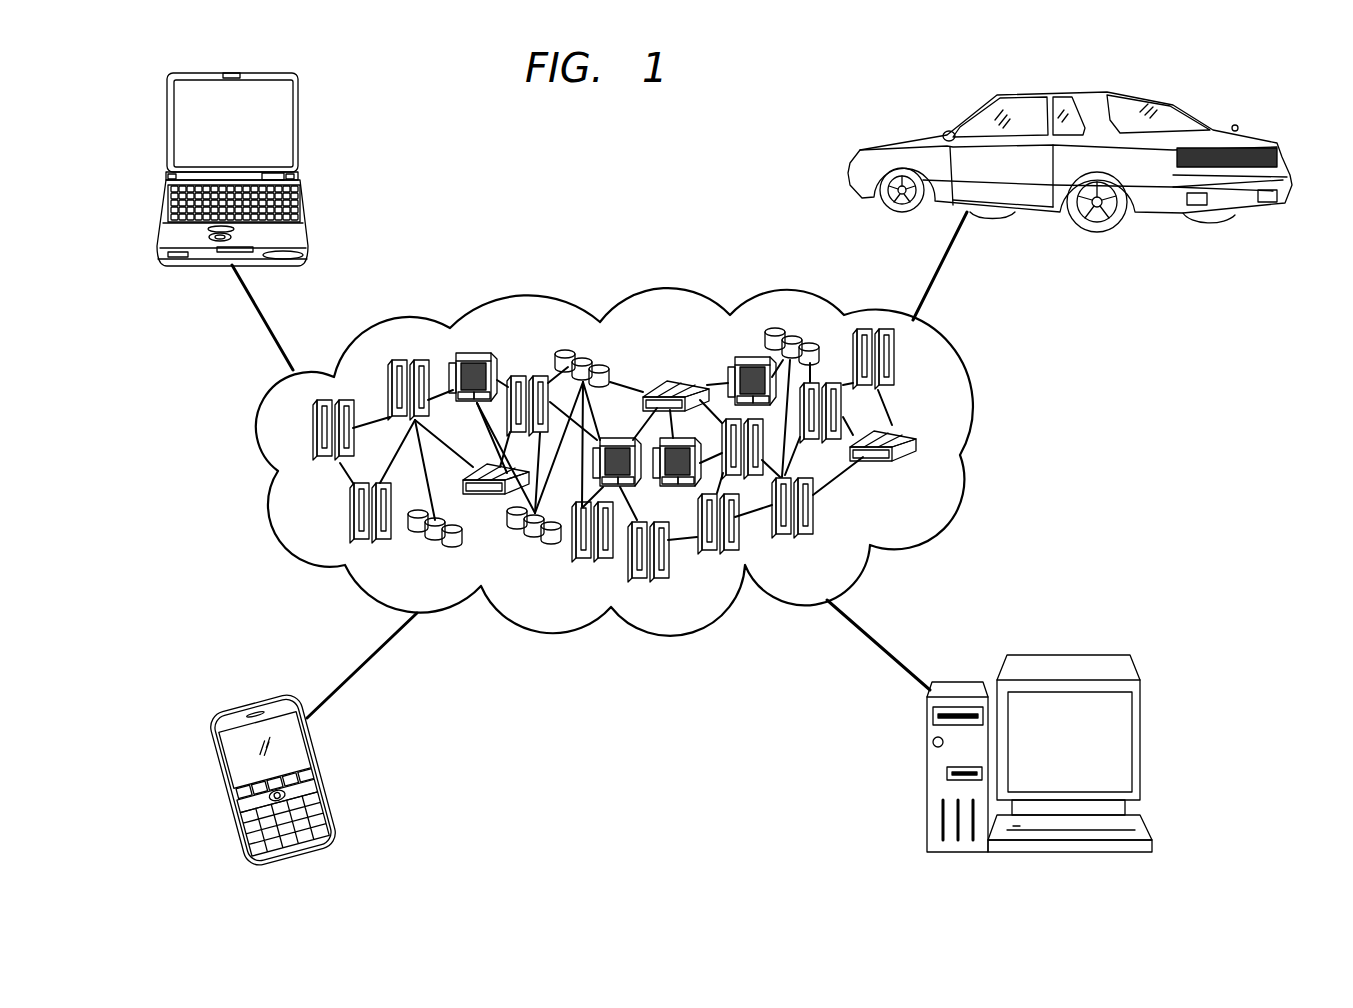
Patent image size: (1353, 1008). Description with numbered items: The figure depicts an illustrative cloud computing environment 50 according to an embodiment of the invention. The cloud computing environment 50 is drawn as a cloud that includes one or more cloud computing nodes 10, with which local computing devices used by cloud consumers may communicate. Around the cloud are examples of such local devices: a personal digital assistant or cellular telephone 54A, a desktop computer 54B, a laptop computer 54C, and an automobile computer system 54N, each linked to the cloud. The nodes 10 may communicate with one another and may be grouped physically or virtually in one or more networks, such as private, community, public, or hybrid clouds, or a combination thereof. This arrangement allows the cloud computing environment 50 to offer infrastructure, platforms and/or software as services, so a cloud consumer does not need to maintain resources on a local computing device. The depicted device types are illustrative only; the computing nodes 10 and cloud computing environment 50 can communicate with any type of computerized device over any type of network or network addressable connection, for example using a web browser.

The cloud computing nodes 10 is at (917, 464).
The cloud computing environment 50 is at (967, 387).
The personal digital assistant (PDA) or cellular telephone 54A is at (212, 770).
The desktop computer 54B is at (1070, 655).
The laptop computer 54C is at (167, 118).
The automobile computer system 54N is at (1248, 134).